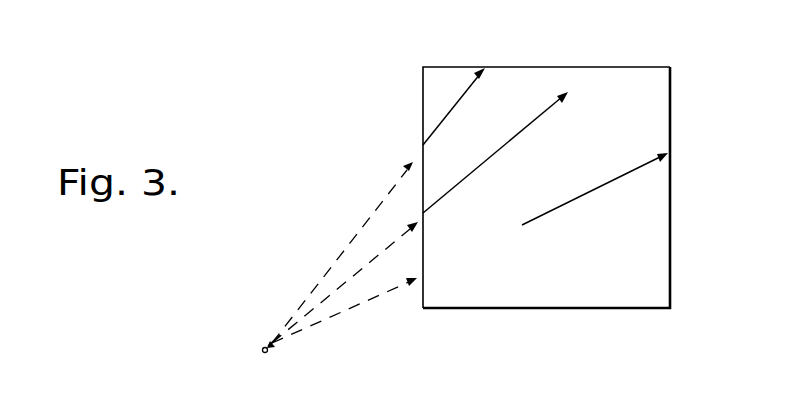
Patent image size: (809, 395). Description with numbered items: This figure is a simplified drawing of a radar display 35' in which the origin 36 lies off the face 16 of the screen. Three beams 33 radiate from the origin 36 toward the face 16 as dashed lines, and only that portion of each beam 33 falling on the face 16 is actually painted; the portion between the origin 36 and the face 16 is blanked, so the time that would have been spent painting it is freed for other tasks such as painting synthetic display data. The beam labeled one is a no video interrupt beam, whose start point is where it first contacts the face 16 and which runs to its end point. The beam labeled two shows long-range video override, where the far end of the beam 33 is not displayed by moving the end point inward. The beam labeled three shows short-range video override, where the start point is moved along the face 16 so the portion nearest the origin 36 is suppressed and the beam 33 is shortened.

The face 16 is at (663, 97).
The beam 33 is at (567, 204).
The origin 36 is at (262, 350).
The simplified radar display 35' is at (753, 175).